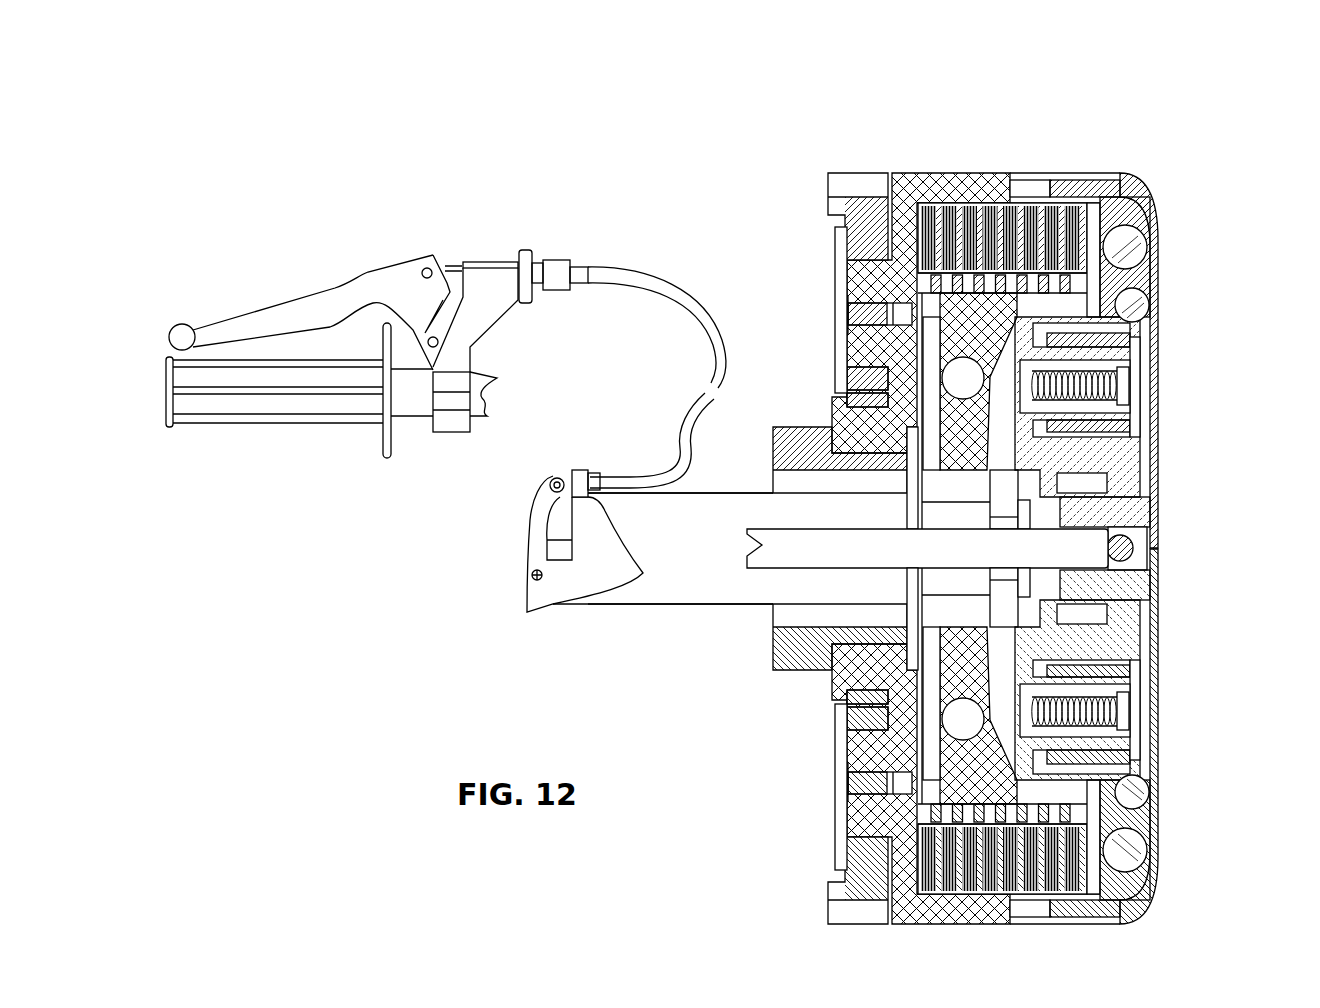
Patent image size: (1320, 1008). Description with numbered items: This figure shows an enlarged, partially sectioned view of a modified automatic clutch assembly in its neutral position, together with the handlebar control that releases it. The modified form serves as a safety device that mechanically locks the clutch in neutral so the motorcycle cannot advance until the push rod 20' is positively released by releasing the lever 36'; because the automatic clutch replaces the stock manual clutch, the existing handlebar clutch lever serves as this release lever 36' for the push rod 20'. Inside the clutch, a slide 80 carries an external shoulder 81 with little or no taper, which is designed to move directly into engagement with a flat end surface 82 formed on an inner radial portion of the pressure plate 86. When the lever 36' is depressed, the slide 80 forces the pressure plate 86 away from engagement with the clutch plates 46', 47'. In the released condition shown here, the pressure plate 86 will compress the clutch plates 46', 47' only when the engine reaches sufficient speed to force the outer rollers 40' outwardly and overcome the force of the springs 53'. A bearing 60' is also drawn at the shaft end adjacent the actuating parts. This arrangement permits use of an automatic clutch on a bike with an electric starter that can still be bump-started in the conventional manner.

The push rod 20' is at (650, 584).
The lever 36' is at (446, 316).
The outer rollers 40' is at (1192, 207).
The clutch plate 46' is at (748, 284).
The clutch plate 47' is at (794, 146).
The springs 53' is at (1163, 374).
The shaft bearing 60' is at (1188, 599).
The slide 80 is at (1150, 543).
The external shoulder 81 is at (1073, 500).
The flat end surface 82 is at (1143, 452).
The pressure plate 86 is at (1102, 287).